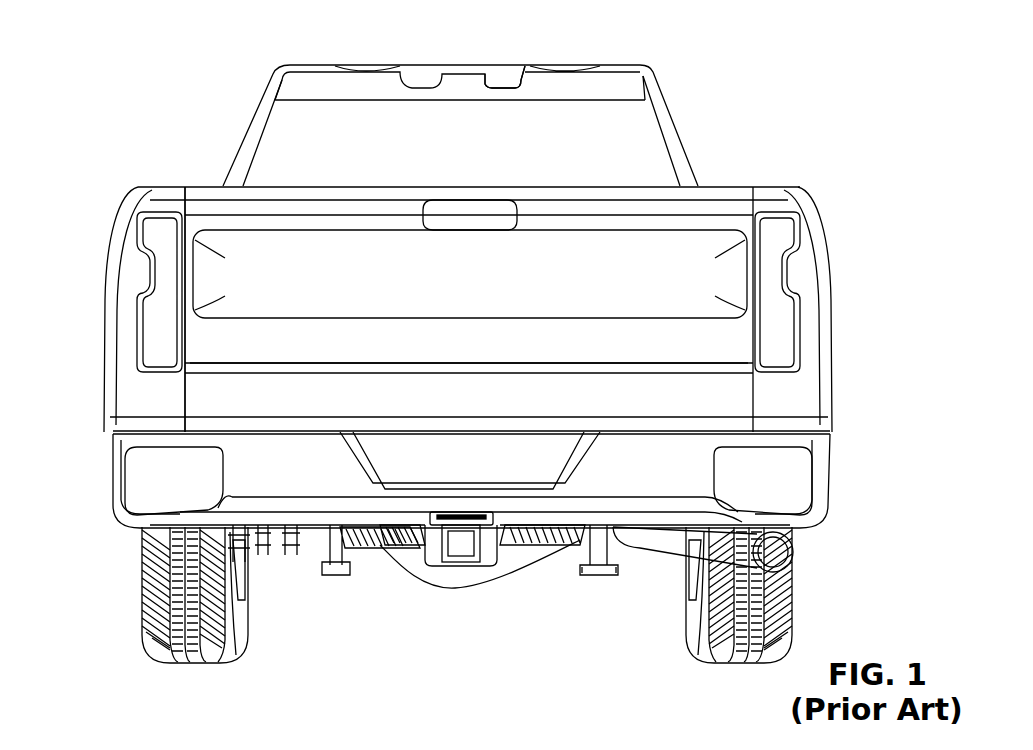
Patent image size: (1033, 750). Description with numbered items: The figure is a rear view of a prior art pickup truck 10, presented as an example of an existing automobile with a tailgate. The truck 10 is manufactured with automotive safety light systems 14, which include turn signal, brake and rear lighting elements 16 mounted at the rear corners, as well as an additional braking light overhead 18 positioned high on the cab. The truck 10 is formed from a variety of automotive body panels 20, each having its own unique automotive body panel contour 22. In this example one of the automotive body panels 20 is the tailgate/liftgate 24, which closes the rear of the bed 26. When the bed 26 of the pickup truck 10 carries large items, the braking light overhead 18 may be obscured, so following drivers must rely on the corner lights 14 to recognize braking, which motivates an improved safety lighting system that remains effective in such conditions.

The pickup truck 10 is at (855, 92).
The automotive safety light system 14 is at (168, 341).
The rear lighting element 16 is at (153, 313).
The braking light overhead 18 is at (498, 80).
The automotive body panel 20 is at (712, 388).
The automotive body panel contour 22 is at (712, 247).
The tailgate/liftgate 24 is at (556, 356).
The bed 26 is at (184, 178).